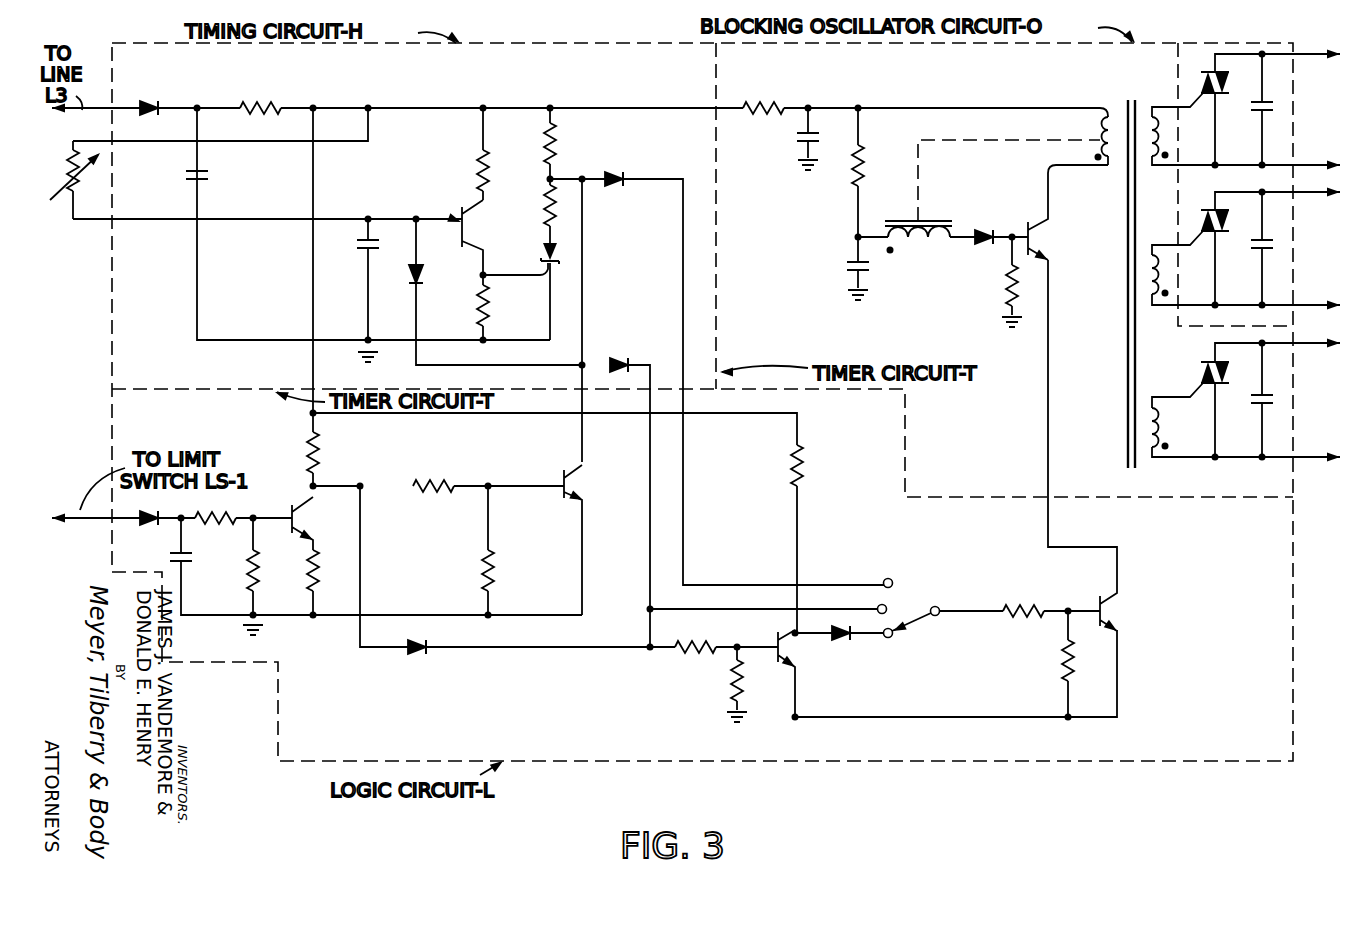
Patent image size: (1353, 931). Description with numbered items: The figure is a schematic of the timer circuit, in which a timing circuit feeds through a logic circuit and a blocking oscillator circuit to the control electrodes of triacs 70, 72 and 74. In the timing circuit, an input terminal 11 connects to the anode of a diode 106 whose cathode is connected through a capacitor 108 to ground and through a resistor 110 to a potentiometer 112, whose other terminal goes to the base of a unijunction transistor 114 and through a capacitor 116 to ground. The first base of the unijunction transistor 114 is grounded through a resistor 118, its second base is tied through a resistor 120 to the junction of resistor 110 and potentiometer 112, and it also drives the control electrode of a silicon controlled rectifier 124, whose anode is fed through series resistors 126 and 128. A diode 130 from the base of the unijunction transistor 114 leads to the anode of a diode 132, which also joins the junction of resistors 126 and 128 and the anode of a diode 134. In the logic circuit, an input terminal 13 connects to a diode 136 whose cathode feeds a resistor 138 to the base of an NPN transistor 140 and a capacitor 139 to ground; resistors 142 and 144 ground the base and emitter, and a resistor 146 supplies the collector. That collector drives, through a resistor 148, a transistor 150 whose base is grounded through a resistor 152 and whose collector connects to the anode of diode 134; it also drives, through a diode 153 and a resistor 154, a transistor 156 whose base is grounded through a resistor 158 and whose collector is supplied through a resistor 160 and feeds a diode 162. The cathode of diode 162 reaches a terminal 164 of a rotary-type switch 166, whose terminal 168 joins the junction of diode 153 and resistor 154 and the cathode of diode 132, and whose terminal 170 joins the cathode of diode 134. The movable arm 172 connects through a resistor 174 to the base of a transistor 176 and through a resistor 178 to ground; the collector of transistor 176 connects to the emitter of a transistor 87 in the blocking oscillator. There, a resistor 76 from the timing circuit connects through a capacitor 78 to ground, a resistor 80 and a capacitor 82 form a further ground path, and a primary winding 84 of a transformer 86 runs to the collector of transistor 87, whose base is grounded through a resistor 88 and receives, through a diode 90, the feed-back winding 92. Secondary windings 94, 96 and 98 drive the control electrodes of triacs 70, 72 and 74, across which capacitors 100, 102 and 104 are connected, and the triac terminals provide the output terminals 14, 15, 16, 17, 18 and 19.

The input terminal 11 is at (92, 112).
The input terminal 13 is at (90, 521).
The output terminal 14 is at (1312, 56).
The output terminal 15 is at (1308, 164).
The output terminal 16 is at (1309, 192).
The output terminal 17 is at (1315, 276).
The output terminal 18 is at (1309, 345).
The output terminal 19 is at (1309, 458).
The triac 70 is at (1222, 93).
The triac 72 is at (1222, 231).
The triac 74 is at (1222, 382).
The resistor 76 is at (760, 114).
The capacitor 78 is at (801, 160).
The resistor 80 is at (857, 184).
The capacitor 82 is at (850, 280).
The primary winding 84 is at (1104, 130).
The transformer 86 is at (1132, 104).
The NPN transistor 87 is at (1040, 238).
The resistor 88 is at (1006, 288).
The diode 90 is at (984, 232).
The feed-back winding 92 is at (918, 250).
The secondary winding 94 is at (1165, 146).
The secondary winding 96 is at (1165, 280).
The secondary winding 98 is at (1160, 420).
The capacitor 100 is at (1268, 115).
The capacitor 102 is at (1274, 248).
The capacitor 104 is at (1274, 412).
The diode 106 is at (161, 104).
The capacitor 108 is at (202, 177).
The resistor 110 is at (259, 106).
The potentiometer 112 is at (545, 266).
The unijunction transistor 114 is at (470, 225).
The capacitor 116 is at (364, 256).
The resistor 118 is at (489, 305).
The resistor 120 is at (486, 164).
The silicon controlled rectifier 124 is at (565, 260).
The resistor 126 is at (548, 203).
The resistor 128 is at (555, 160).
The diode 130 is at (425, 275).
The diode 132 is at (609, 361).
The diode 134 is at (600, 176).
The diode 136 is at (152, 522).
The resistor 138 is at (211, 516).
The capacitor 139 is at (189, 554).
The NPN transistor 140 is at (298, 518).
The resistor 142 is at (250, 590).
The resistor 144 is at (314, 589).
The resistor 146 is at (318, 450).
The resistor 148 is at (418, 482).
The NPN transistor 150 is at (570, 489).
The resistor 152 is at (490, 581).
The diode 153 is at (417, 655).
The resistor 154 is at (690, 652).
The NPN transistor 156 is at (789, 652).
The resistor 158 is at (729, 694).
The resistor 160 is at (805, 476).
The diode 162 is at (848, 635).
The terminal 164 is at (893, 637).
The rotary-type switch 166 is at (912, 601).
The terminal 168 is at (877, 609).
The terminal 170 is at (886, 580).
The movable arm 172 is at (918, 621).
The resistor 174 is at (1021, 615).
The NPN transistor 176 is at (1115, 609).
The resistor 178 is at (1066, 674).